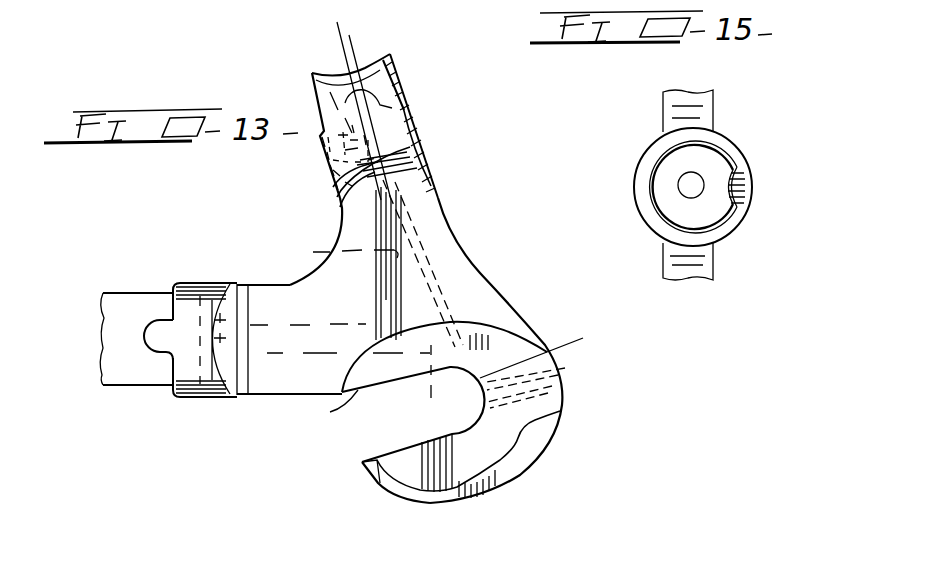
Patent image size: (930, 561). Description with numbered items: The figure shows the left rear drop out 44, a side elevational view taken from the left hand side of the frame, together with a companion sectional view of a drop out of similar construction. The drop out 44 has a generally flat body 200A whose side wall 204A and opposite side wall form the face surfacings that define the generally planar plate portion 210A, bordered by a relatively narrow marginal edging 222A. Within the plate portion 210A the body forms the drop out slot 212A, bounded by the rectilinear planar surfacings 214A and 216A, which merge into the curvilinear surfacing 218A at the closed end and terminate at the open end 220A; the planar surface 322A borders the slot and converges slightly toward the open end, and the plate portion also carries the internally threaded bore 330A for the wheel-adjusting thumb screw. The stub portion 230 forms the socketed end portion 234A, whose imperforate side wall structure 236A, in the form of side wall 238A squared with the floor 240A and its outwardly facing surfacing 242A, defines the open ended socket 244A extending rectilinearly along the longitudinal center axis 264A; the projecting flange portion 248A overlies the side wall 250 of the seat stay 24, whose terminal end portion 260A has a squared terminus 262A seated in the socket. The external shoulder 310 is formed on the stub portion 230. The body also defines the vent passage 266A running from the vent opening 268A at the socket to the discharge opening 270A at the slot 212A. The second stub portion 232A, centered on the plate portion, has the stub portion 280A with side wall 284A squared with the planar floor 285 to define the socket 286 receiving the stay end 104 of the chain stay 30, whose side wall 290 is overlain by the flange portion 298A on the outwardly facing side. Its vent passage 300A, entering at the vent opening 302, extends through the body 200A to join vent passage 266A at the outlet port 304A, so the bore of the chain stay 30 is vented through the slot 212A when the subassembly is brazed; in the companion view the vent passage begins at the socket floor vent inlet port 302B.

In FIG. 13, the seat stay 24 is at (370, 70).
In FIG. 13, the chain stay 30 is at (117, 303).
In FIG. 13, the rear drop out 44 is at (547, 294).
In FIG. 13, the stay end 104 is at (124, 376).
In FIG. 13, the drop out body 200A is at (445, 228).
In FIG. 13, the body side wall 204A is at (290, 365).
In FIG. 13, the body plate portion 210A is at (489, 277).
In FIG. 13, the drop out slot 212A is at (346, 461).
In FIG. 13, the rectilinear planar surfacing 214A is at (319, 407).
In FIG. 13, the rectilinear planar surfacing 216A is at (397, 445).
In FIG. 13, the curvilinear surfacing 218A is at (557, 346).
In FIG. 13, the slot open end 220A is at (367, 475).
In FIG. 13, the marginal edging 222A is at (570, 438).
In FIG. 13, the stub portion 230 is at (430, 157).
In FIG. 13, the stub portion 232A is at (190, 405).
In FIG. 13, the socketed end portion 234A is at (422, 133).
In FIG. 13, the side wall structure 236A is at (345, 150).
In FIG. 13, the side wall 238A is at (336, 138).
In FIG. 13, the socketed end portion floor 240A is at (330, 181).
In FIG. 13, the outwardly facing surfacing 242A is at (320, 100).
In FIG. 13, the socket 244A is at (402, 95).
In FIG. 13, the flange portion 248A is at (327, 73).
In FIG. 13, the stay side wall 250 is at (333, 67).
In FIG. 13, the terminal end portion 260A is at (417, 115).
In FIG. 13, the terminus 262A is at (432, 188).
In FIG. 13, the longitudinal center axis 264A is at (340, 33).
In FIG. 13, the vent passage 266A is at (313, 252).
In FIG. 13, the vent opening 268A is at (393, 70).
In FIG. 13, the discharge opening 270A is at (413, 403).
In FIG. 13, the stub portion 280A is at (173, 275).
In FIG. 13, the side wall 284A is at (193, 300).
In FIG. 15, the planar floor 285 is at (703, 157).
In FIG. 15, the socket 286 is at (719, 228).
In FIG. 13, the stay side wall 290 is at (120, 358).
In FIG. 13, the flange portion 298A is at (157, 340).
In FIG. 13, the vent passage 300A is at (322, 333).
In FIG. 13, the vent opening 302 is at (275, 317).
In FIG. 15, the socket floor vent inlet port 302B is at (682, 182).
In FIG. 13, the outlet port 304A is at (420, 320).
In FIG. 13, the external shoulder 310 is at (342, 207).
In FIG. 13, the planar surface 322A is at (437, 467).
In FIG. 13, the internally threaded bore 330A is at (565, 368).